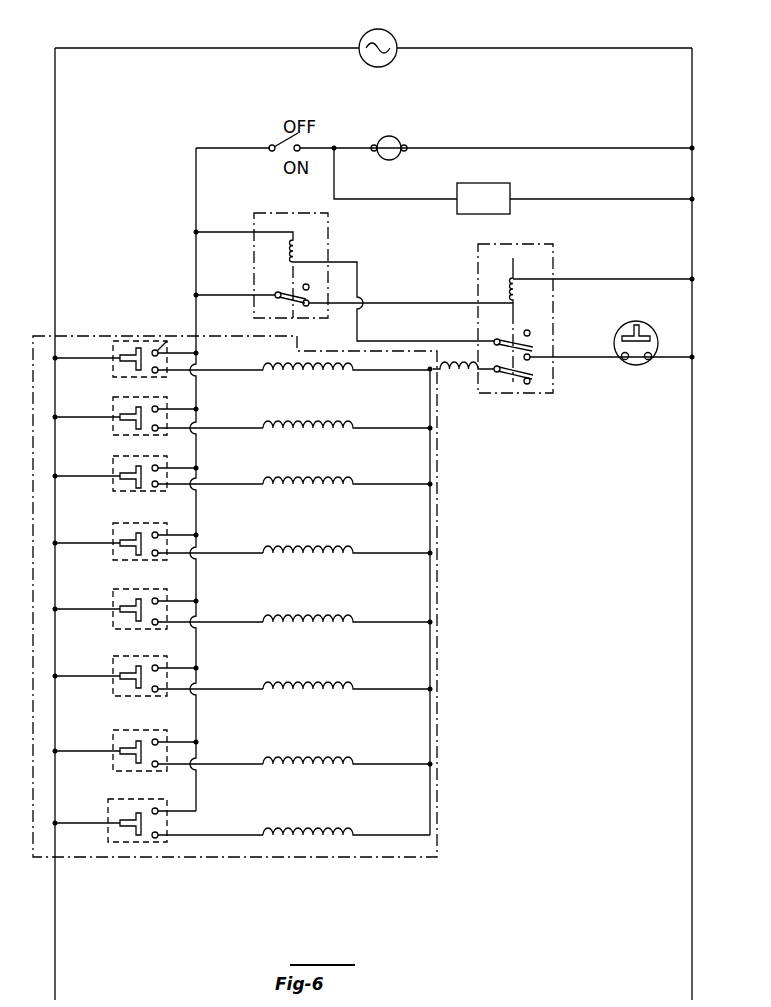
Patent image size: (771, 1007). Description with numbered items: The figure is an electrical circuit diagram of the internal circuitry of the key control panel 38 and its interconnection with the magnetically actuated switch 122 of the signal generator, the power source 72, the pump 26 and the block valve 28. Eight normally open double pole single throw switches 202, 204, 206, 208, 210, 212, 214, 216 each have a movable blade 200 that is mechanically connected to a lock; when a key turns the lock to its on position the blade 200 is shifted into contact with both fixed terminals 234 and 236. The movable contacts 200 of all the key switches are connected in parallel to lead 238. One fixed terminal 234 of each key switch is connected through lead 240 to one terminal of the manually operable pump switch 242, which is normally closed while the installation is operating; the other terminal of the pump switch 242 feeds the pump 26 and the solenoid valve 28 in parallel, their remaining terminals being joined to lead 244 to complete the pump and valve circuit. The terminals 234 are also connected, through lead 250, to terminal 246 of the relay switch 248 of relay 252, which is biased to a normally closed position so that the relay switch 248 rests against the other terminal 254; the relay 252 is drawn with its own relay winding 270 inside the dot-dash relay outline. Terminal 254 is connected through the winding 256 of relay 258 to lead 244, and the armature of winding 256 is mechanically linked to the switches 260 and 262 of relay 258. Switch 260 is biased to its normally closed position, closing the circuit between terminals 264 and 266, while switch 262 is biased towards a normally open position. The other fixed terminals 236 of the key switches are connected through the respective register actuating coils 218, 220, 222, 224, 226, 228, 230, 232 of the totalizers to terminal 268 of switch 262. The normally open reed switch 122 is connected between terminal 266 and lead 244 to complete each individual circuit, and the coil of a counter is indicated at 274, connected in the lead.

The pump 26 is at (398, 133).
The block valve 28 is at (483, 191).
The key control panel 38 is at (440, 676).
The power source 72 is at (360, 45).
The magnetically actuated switch 122 is at (650, 320).
The movable blade 200 is at (138, 348).
The normally open double pole single throw switch 202 is at (113, 342).
The normally open double pole single throw switch 204 is at (113, 397).
The normally open double pole single throw switch 206 is at (113, 457).
The normally open double pole single throw switch 208 is at (113, 523).
The normally open double pole single throw switch 210 is at (113, 589).
The normally open double pole single throw switch 212 is at (113, 656).
The normally open double pole single throw switch 214 is at (113, 730).
The normally open double pole single throw switch 216 is at (108, 800).
The actuating coil 218 is at (295, 368).
The actuating coil 220 is at (318, 415).
The actuating coil 222 is at (313, 470).
The actuating coil 224 is at (308, 539).
The actuating coil 226 is at (313, 606).
The actuating coil 228 is at (308, 673).
The actuating coil 230 is at (318, 749).
The actuating coil 232 is at (318, 820).
The fixed terminal 234 is at (175, 339).
The fixed terminal 236 is at (157, 373).
The lead 238 is at (55, 300).
The lead 240 is at (197, 311).
The pump switch 242 is at (283, 144).
The lead 244 is at (692, 128).
The terminal 246 is at (276, 291).
The relay switch 248 is at (285, 303).
The lead 250 is at (245, 288).
The relay 252 is at (330, 262).
The terminal 254 is at (308, 310).
The winding 256 is at (507, 300).
The relay 258 is at (474, 258).
The switch 260 is at (532, 335).
The switch 262 is at (530, 385).
The terminal 264 is at (495, 340).
The terminal 266 is at (533, 359).
The terminal 268 is at (494, 368).
The relay coil 270 is at (300, 252).
The coil of counter 274 is at (430, 374).